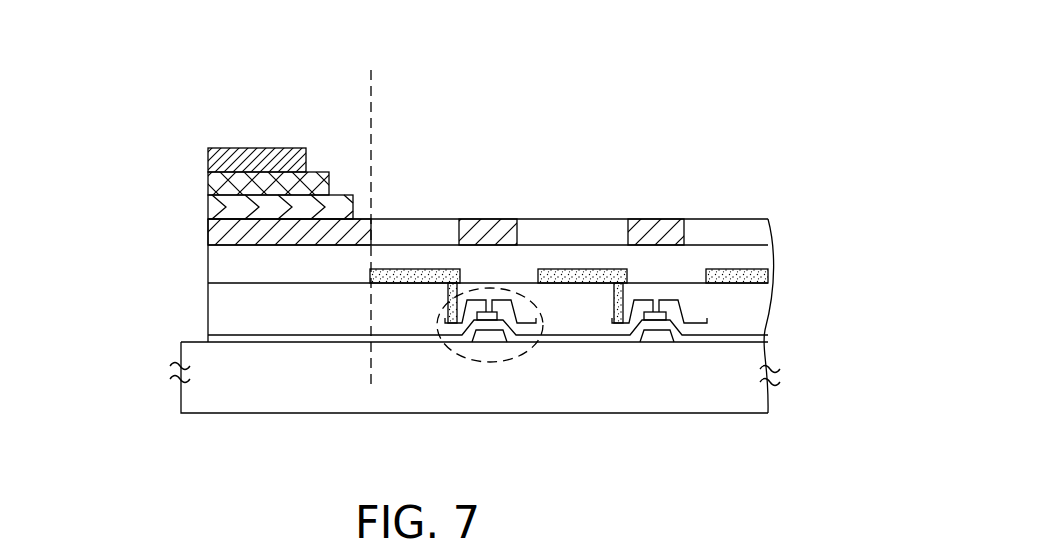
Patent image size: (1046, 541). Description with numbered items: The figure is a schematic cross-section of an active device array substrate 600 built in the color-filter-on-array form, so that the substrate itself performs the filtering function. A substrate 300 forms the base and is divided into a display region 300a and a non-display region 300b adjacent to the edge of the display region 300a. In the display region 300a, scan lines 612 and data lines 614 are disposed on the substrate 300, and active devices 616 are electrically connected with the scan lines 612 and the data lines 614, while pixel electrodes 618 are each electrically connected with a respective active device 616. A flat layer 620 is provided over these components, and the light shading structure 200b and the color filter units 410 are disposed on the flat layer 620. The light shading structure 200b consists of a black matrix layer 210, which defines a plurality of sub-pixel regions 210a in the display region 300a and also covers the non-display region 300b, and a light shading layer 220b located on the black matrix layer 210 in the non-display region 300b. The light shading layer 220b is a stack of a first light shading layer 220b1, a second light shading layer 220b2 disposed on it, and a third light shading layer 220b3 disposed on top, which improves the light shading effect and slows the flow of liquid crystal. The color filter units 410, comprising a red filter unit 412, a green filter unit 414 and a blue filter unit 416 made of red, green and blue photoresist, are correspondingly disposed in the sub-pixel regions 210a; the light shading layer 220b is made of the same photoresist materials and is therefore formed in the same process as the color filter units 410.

The active device array substrate 600 is at (423, 269).
The substrate 300 is at (192, 402).
The display region 300a is at (768, 96).
The non-display region 300b is at (365, 96).
The light shading structure 200b is at (192, 131).
The light shading layer 220b is at (192, 172).
The first light shading layer 220b1 is at (208, 211).
The second light shading layer 220b2 is at (208, 186).
The third light shading layer 220b3 is at (208, 160).
The black matrix layer 210 is at (208, 228).
The sub-pixel regions 210a is at (732, 205).
The color filter units 410 is at (591, 368).
The red filter unit 412 is at (428, 236).
The green filter unit 414 is at (585, 235).
The blue filter unit 416 is at (726, 235).
The scan lines 612 is at (484, 342).
The data lines 614 is at (528, 324).
The active devices 616 is at (448, 302).
The pixel electrodes 618 is at (372, 272).
The flat layer 620 is at (746, 258).